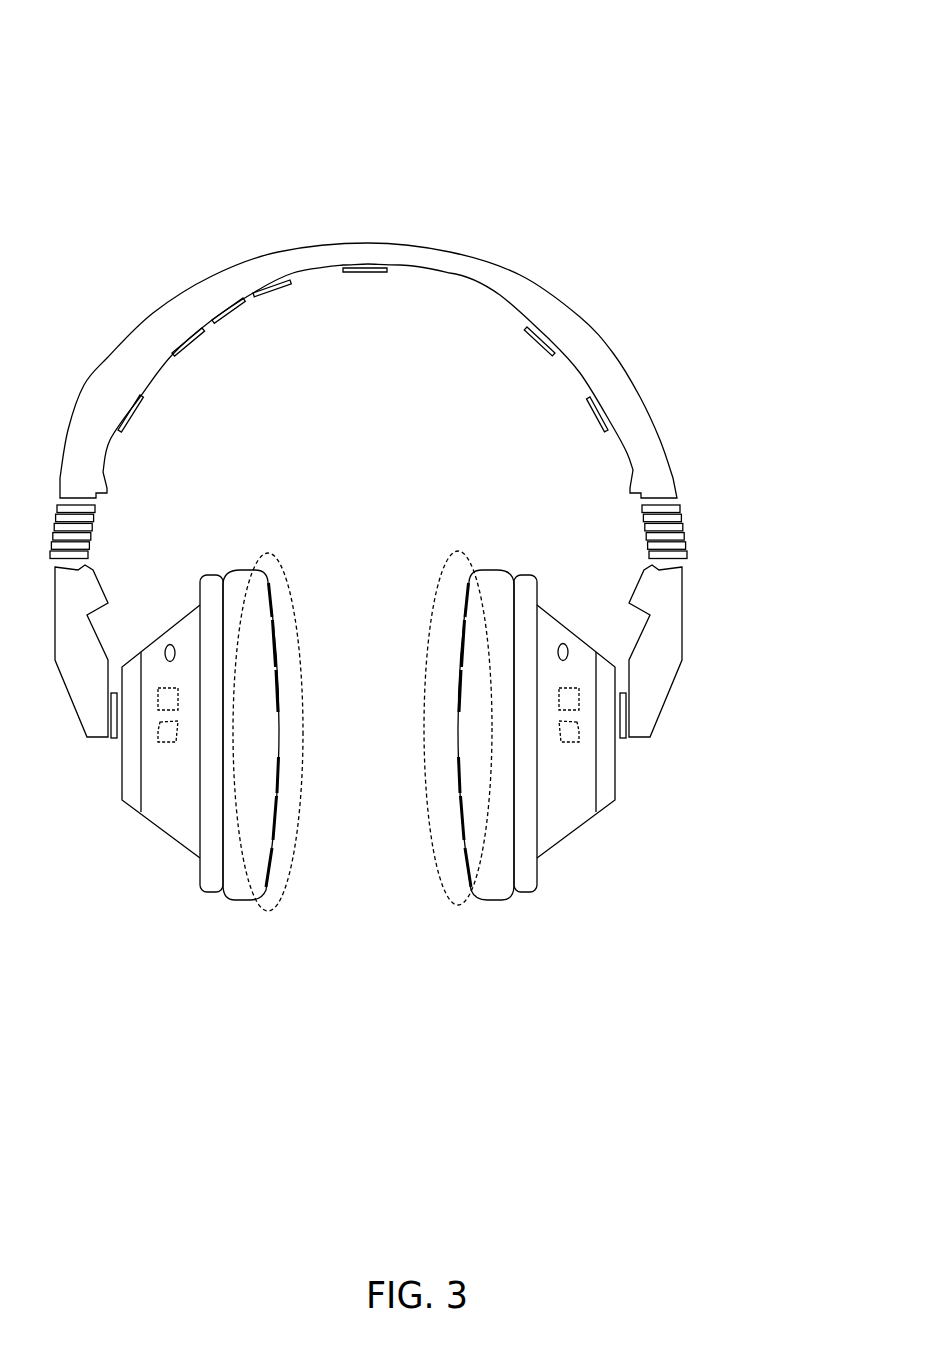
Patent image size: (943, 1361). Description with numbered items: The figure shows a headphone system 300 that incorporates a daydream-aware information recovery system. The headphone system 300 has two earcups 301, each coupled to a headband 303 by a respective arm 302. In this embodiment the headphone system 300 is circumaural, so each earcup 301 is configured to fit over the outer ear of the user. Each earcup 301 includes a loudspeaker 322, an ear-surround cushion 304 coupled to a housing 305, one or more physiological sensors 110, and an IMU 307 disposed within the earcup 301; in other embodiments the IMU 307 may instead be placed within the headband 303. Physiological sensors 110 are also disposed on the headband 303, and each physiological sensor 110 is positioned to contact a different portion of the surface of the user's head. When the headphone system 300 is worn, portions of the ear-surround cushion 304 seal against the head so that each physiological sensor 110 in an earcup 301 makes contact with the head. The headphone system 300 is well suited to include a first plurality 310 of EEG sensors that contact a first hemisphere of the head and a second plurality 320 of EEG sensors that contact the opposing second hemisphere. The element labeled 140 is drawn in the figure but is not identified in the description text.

The headphone system 300 is at (138, 50).
The earcup 301 is at (367, 747).
The arm 302 is at (665, 688).
The headband 303 is at (520, 275).
The ear-surround cushion 304 is at (246, 568).
The housing 305 is at (170, 836).
The IMU 307 is at (167, 688).
The first plurality of EEG sensors 310 is at (457, 906).
The second plurality of EEG sensors 320 is at (267, 912).
The loudspeaker 322 is at (165, 744).
The indicator 140 is at (569, 652).
The physiological sensor 110 is at (131, 411).